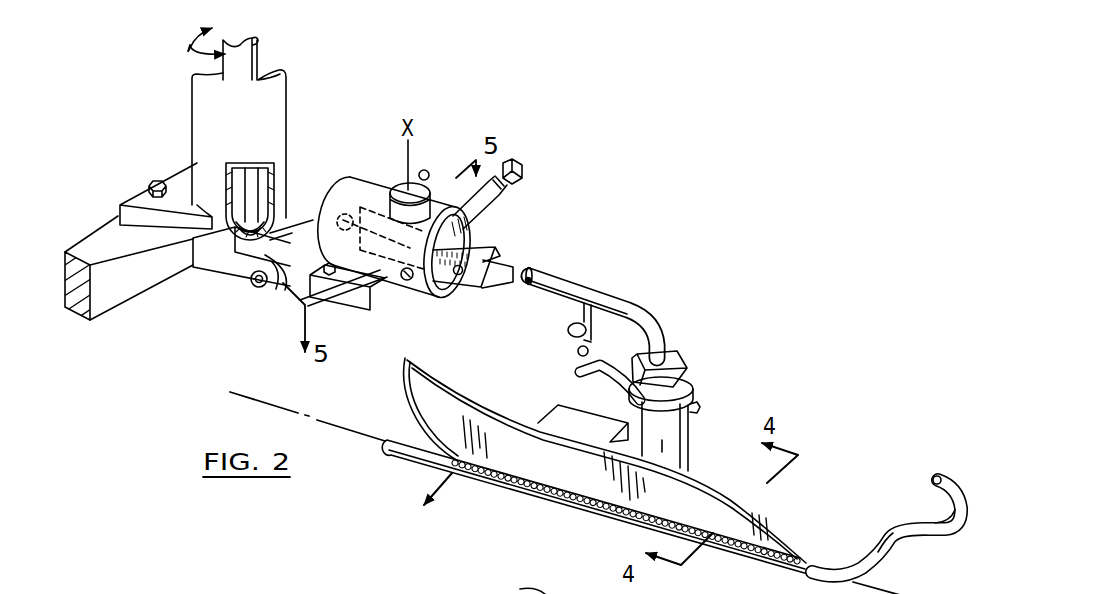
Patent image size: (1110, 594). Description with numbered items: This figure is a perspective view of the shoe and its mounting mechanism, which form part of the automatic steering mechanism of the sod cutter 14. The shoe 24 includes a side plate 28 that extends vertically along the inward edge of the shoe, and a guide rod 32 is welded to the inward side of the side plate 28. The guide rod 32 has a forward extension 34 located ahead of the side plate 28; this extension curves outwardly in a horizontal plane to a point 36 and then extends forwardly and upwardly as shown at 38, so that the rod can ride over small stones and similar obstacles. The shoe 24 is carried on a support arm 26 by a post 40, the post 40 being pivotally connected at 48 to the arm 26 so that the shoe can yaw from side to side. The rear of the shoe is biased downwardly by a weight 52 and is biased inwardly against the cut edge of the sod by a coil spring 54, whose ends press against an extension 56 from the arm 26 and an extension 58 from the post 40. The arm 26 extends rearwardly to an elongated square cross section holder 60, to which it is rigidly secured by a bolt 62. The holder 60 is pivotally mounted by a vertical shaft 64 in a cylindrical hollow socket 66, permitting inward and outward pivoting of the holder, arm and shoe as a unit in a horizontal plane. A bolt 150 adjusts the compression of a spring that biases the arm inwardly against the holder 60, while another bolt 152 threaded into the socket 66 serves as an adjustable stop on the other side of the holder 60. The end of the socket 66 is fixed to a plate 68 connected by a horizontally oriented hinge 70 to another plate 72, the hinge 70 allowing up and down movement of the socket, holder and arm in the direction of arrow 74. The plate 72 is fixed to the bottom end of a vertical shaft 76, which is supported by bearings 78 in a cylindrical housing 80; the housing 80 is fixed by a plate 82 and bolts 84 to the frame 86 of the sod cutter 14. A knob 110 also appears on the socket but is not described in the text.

The sod cutter 14 is at (122, 318).
The shoe 24 is at (741, 392).
The support arm 26 is at (613, 290).
The side plate 28 is at (786, 527).
The guide rod 32 is at (565, 500).
The forward extension 34 is at (868, 565).
The point 36 is at (886, 523).
The forwardly and upwardly extending portion 38 is at (928, 523).
The post 40 is at (694, 443).
The pivot 48 is at (677, 356).
The weight 52 is at (543, 412).
The coil spring 54 is at (692, 380).
The extension 56 is at (575, 349).
The extension 58 is at (577, 374).
The holder 60 is at (473, 291).
The bolt 62 is at (459, 282).
The vertical shaft 64 is at (398, 288).
The cylindrical hollow socket 66 is at (372, 196).
The plate 68 is at (283, 289).
The hinge 70 is at (257, 290).
The plate 72 is at (213, 265).
The arrow 74 is at (271, 306).
The vertical shaft 76 is at (260, 47).
The bearings 78 is at (288, 216).
The cylindrical housing 80 is at (287, 111).
The plate 82 is at (188, 188).
The bolts 84 is at (150, 184).
The frame 86 is at (153, 263).
The knob 110 is at (341, 193).
The bolt 150 is at (521, 168).
The bolt 152 is at (407, 282).